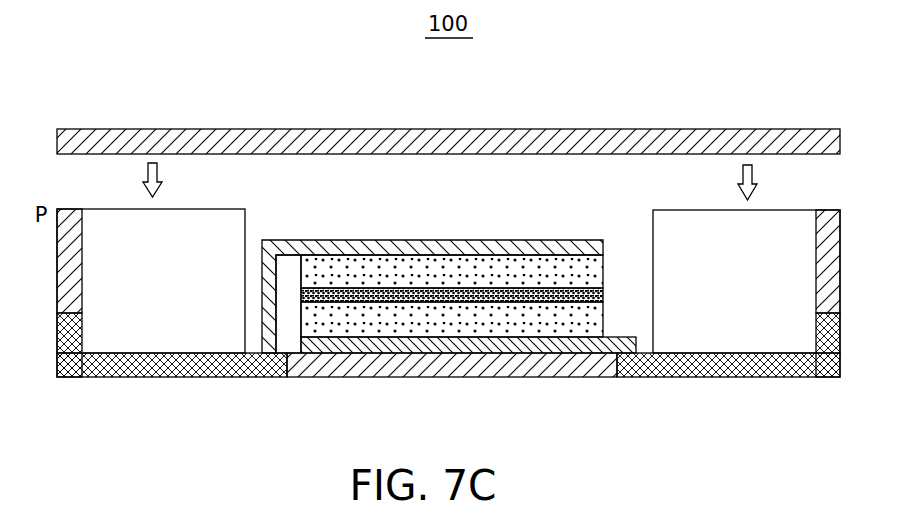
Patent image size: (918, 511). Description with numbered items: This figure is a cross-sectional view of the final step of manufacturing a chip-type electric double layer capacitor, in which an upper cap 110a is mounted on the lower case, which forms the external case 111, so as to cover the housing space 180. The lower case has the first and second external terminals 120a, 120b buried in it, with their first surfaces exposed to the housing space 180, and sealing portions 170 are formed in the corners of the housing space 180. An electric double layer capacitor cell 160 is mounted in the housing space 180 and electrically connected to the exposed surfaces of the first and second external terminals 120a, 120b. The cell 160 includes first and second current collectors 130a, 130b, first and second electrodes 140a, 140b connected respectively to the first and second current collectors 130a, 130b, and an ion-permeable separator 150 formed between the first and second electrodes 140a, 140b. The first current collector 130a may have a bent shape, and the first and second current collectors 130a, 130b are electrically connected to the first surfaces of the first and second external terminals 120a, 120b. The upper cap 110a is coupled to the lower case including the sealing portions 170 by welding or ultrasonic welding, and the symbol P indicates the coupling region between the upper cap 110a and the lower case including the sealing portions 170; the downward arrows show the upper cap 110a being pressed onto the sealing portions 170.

The upper cap 110a is at (703, 146).
The external case 111 is at (522, 363).
The first external terminal 120a is at (170, 377).
The second external terminal 120b is at (743, 377).
The first current collector 130a is at (438, 248).
The second current collector 130b is at (588, 345).
The first electrode 140a is at (398, 272).
The second electrode 140b is at (323, 322).
The ion-permeable separator 150 is at (465, 293).
The electric double layer capacitor cell 160 is at (528, 228).
The sealing portions 170 is at (197, 230).
The housing space 180 is at (630, 289).
The coupling region P is at (827, 193).